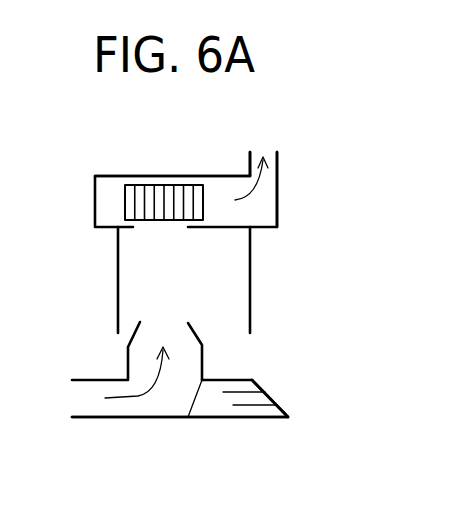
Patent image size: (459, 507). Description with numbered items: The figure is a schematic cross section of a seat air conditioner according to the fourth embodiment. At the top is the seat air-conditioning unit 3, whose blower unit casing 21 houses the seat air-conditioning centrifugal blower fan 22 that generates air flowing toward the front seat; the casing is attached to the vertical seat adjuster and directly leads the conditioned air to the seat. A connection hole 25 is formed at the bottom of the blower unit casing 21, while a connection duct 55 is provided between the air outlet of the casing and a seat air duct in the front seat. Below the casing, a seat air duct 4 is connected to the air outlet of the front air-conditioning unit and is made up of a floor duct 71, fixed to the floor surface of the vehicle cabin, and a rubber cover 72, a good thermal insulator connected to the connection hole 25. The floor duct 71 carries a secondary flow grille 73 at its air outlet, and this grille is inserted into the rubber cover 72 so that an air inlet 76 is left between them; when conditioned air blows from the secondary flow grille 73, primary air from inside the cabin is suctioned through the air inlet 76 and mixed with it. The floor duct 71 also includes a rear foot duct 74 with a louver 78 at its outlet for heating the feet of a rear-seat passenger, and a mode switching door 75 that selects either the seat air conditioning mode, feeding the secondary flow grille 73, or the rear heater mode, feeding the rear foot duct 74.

The seat air-conditioning unit 3 is at (93, 162).
The blower unit casing 21 is at (93, 203).
The seat air-conditioning centrifugal blower fan 22 is at (158, 200).
The connection hole 25 is at (158, 228).
The connection duct 55 is at (277, 178).
The rubber cover 72 is at (251, 280).
The secondary flow grille 73 is at (128, 358).
The air inlet 76 is at (215, 325).
The seat air duct 4 is at (302, 353).
The louver 78 is at (262, 400).
The mode switching door 75 is at (200, 405).
The rear foot duct 74 is at (268, 417).
The floor duct 71 is at (93, 417).